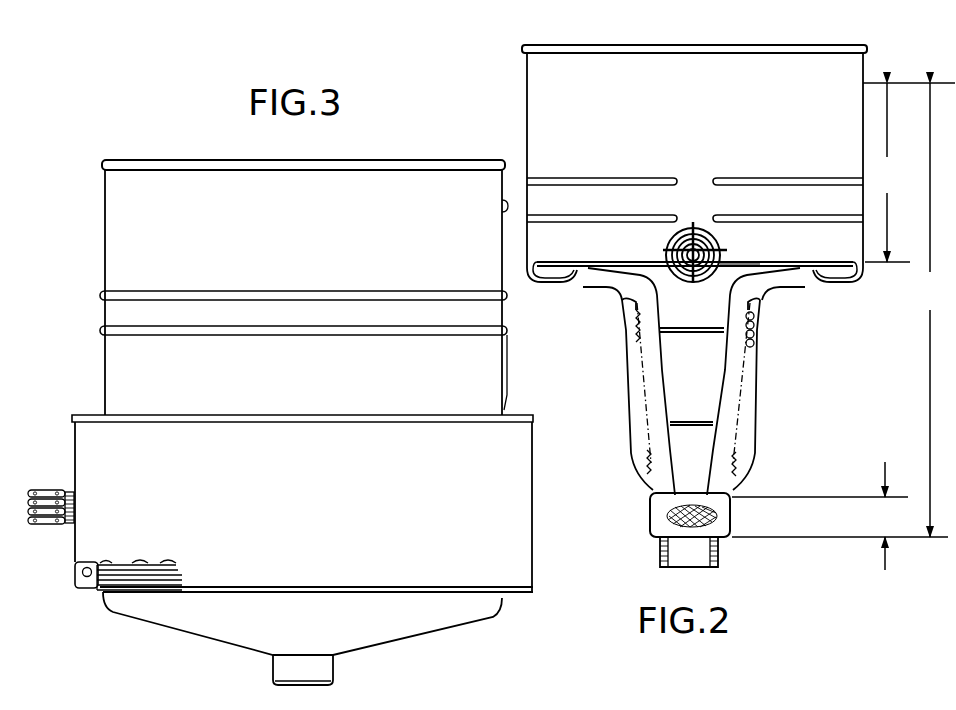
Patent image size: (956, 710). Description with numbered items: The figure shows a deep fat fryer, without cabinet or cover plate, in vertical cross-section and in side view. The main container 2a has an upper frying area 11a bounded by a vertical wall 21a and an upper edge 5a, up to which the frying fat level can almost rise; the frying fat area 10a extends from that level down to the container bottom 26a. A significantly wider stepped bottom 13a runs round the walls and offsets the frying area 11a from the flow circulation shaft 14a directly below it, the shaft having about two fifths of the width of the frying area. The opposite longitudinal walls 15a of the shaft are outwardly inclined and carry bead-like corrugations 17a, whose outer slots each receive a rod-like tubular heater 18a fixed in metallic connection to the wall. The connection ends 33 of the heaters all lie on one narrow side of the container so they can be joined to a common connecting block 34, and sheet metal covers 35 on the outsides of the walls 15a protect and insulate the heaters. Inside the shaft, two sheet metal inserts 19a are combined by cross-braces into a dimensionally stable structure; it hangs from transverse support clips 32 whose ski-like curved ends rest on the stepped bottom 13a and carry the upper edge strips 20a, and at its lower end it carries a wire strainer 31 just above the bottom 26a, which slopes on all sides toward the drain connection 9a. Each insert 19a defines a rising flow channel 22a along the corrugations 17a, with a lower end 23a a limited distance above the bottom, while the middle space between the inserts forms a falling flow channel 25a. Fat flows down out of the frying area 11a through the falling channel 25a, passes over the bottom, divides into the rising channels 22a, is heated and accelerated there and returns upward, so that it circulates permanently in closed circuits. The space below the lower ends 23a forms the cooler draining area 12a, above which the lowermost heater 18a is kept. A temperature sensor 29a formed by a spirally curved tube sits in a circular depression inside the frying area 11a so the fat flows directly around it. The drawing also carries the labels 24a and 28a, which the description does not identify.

In FIG. 2, the main container 2a is at (604, 348).
In FIG. 2, the edge 5a is at (523, 46).
In FIG. 2, the drain connection 9a is at (716, 556).
In FIG. 3, the drain connection 9a is at (322, 660).
In FIG. 2, the frying fat area 10a is at (931, 310).
In FIG. 2, the frying area 11a is at (909, 172).
In FIG. 2, the draining area 12a is at (840, 516).
In FIG. 2, the stepped bottom 13a is at (594, 284).
In FIG. 2, the flow circulation shaft 14a is at (634, 397).
In FIG. 2, the longitudinal walls 15a is at (722, 396).
In FIG. 2, the corrugations 17a is at (757, 360).
In FIG. 2, the tubular heaters 18a is at (756, 337).
In FIG. 3, the tubular heaters 18a is at (118, 572).
In FIG. 2, the inserts 19a is at (712, 456).
In FIG. 2, the upper edge strip 20a is at (782, 264).
In FIG. 2, the vertical wall 21a is at (530, 138).
In FIG. 3, the vertical wall 21a is at (366, 183).
In FIG. 2, the rising flow channel 22a is at (727, 414).
In FIG. 2, the lower end 23a is at (727, 486).
In FIG. 2, the right flange 24a is at (776, 282).
In FIG. 2, the falling flow channel 25a is at (692, 353).
In FIG. 3, the bottom 26a is at (203, 636).
In FIG. 3, the seam 28a is at (503, 212).
In FIG. 2, the temperature sensor 29a is at (683, 228).
In FIG. 2, the wire strainer 31 is at (688, 505).
In FIG. 2, the transverse support clips 32 is at (735, 262).
In FIG. 3, the connection ends 33 is at (97, 592).
In FIG. 3, the connecting block 34 is at (48, 490).
In FIG. 2, the sheet metal covers 35 is at (623, 362).
In FIG. 3, the sheet metal covers 35 is at (452, 438).